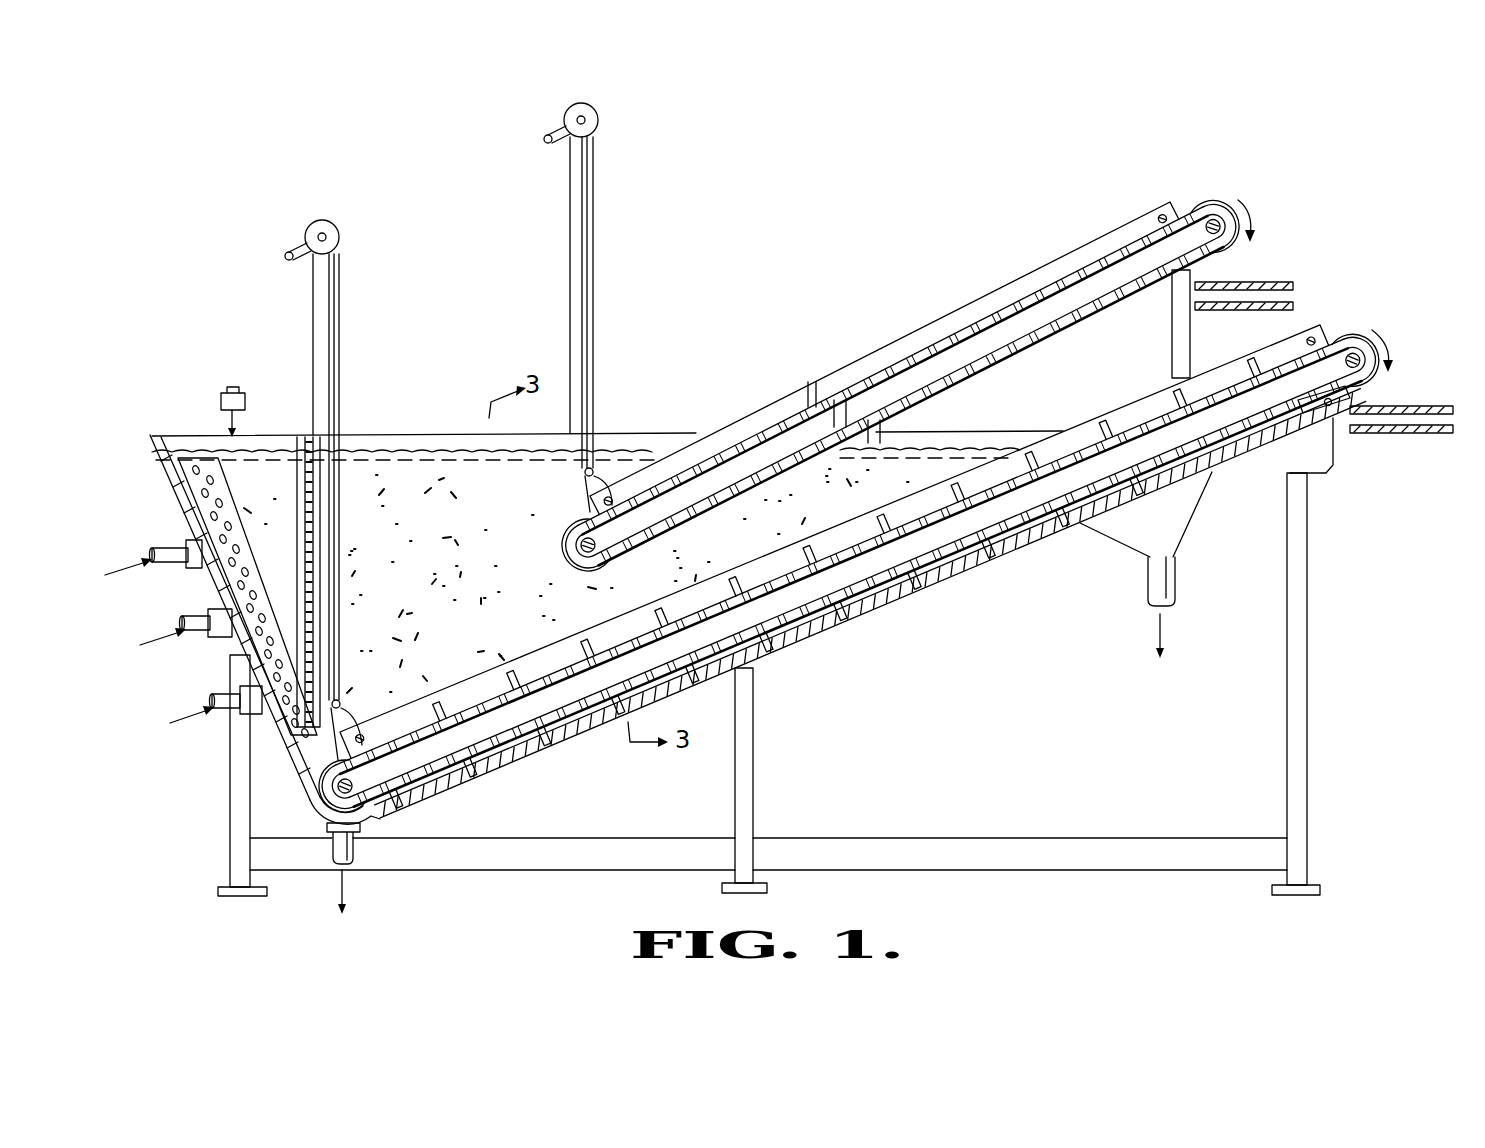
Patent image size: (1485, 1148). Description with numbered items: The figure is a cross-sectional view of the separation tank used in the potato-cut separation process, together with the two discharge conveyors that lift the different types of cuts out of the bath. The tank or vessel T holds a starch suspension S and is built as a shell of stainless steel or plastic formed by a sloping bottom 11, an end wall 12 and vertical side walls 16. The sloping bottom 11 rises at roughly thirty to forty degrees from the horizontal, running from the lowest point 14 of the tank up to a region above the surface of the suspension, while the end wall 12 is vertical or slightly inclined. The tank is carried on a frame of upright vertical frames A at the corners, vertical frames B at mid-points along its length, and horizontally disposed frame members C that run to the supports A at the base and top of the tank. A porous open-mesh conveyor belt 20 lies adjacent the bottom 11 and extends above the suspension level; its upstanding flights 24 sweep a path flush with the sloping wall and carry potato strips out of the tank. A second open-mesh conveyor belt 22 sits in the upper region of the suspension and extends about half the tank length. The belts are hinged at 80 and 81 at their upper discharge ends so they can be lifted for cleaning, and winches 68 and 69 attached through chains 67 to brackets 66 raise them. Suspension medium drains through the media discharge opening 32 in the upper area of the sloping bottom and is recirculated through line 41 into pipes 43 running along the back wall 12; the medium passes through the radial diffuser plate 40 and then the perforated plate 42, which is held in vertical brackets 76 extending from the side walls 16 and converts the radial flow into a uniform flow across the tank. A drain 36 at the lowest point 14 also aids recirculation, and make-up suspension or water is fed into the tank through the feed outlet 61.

The sloping bottom 11 is at (900, 597).
The end wall 12 is at (300, 770).
The lowest point 14 is at (330, 820).
The side walls 16 is at (627, 436).
The conveyor belt 20 is at (847, 562).
The second conveyor belt 22 is at (962, 327).
The flights 24 is at (737, 583).
The media discharge opening 32 is at (1185, 530).
The drain 36 is at (333, 862).
The radial diffuser plate 40 is at (217, 530).
The line 41 is at (1177, 593).
The perforated plate 42 is at (303, 537).
The pipes 43 is at (197, 620).
The feed outlet 61 is at (222, 396).
The brackets 66 is at (342, 700).
The chains 67 is at (341, 343).
The winch 68 is at (341, 232).
The winch 69 is at (600, 117).
The vertical brackets 76 is at (320, 509).
The pivot 80 is at (1357, 394).
The pivot 81 is at (1205, 270).
The upright vertical frames A is at (230, 759).
The vertical frames B is at (750, 747).
The horizontal frame members C is at (930, 838).
The tank T is at (438, 435).
The starch suspension S is at (463, 520).